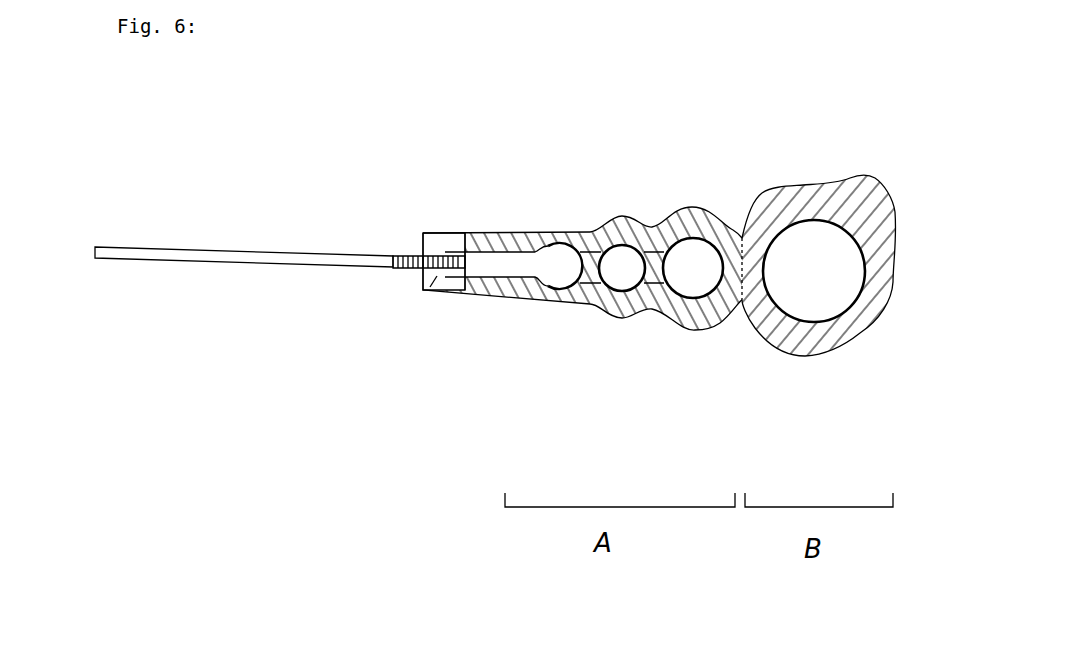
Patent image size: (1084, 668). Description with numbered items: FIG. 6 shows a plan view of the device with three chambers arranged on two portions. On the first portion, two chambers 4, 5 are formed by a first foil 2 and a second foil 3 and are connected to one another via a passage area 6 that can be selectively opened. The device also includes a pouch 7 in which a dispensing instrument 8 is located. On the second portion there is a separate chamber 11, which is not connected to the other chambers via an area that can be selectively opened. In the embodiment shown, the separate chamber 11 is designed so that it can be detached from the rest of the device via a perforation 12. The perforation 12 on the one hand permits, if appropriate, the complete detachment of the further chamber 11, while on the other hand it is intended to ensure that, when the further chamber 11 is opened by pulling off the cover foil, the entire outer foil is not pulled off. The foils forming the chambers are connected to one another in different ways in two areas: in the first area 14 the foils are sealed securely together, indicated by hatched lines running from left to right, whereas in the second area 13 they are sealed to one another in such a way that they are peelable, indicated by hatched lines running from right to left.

The first foil 2 is at (434, 286).
The second foil 3 is at (503, 298).
The chamber 4 is at (622, 255).
The chamber 5 is at (691, 258).
The passage area 6 is at (592, 263).
The pouch 7 is at (553, 258).
The dispensing instrument 8 is at (315, 260).
The separate chamber 11 is at (814, 302).
The perforation 12 is at (780, 197).
The second area 13 is at (482, 243).
The first area 14 is at (753, 321).